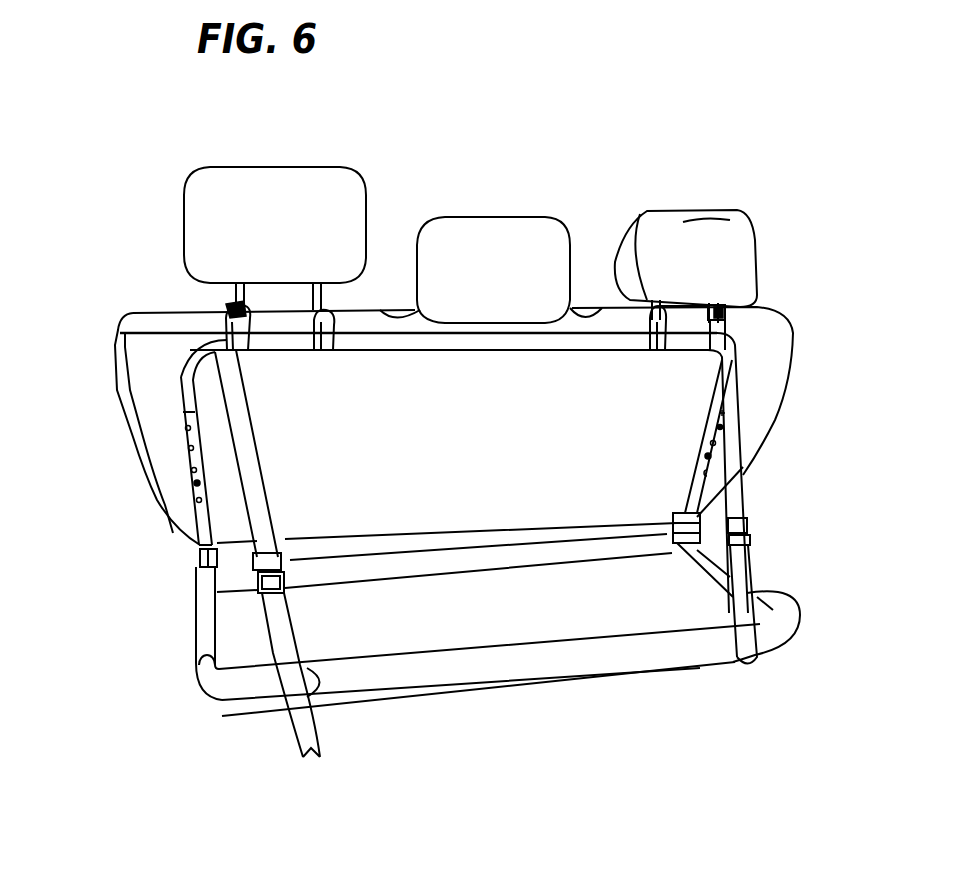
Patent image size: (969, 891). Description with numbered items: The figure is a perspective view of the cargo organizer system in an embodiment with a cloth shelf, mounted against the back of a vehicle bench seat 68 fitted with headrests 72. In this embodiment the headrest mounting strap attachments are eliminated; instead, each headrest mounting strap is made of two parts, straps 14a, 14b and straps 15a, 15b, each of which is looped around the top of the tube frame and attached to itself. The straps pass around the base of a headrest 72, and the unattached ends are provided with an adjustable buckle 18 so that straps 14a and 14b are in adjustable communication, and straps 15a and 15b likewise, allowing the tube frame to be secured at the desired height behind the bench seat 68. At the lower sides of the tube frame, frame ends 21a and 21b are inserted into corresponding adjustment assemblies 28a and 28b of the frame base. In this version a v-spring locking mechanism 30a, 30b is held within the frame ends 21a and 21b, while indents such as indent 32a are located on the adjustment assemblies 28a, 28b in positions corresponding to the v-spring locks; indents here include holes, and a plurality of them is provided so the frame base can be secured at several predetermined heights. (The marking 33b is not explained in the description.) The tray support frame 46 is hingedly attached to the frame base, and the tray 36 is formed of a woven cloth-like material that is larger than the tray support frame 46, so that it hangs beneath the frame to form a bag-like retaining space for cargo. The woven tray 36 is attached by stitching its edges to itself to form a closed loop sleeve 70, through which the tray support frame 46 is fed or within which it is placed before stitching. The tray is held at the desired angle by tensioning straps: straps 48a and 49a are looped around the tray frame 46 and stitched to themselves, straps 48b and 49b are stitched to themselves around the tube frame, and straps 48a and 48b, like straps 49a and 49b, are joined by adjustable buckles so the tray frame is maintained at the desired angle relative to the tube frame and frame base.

The headrest 72 is at (193, 210).
The buckle 18 is at (238, 313).
The strap 15a is at (232, 312).
The strap 15b is at (323, 322).
The strap 14a is at (722, 333).
The strap 14b is at (652, 322).
The tensioning strap 49a is at (278, 632).
The tensioning strap 49b is at (223, 375).
The tensioning strap 48a is at (745, 595).
The tensioning strap 48b is at (730, 373).
The adjustment assembly 28a is at (183, 412).
The adjustment assembly 28b is at (725, 413).
The indent 32a is at (186, 432).
The v-spring lock 30a is at (196, 483).
The v-spring lock 30b is at (712, 455).
The rail hole 33b is at (723, 427).
The frame end 21a is at (195, 505).
The frame end 21b is at (710, 480).
The vehicle bench seat 68 is at (454, 452).
The closed loop sleeve 70 is at (443, 672).
The woven tray 36 is at (587, 675).
The tray support frame 46 is at (800, 613).